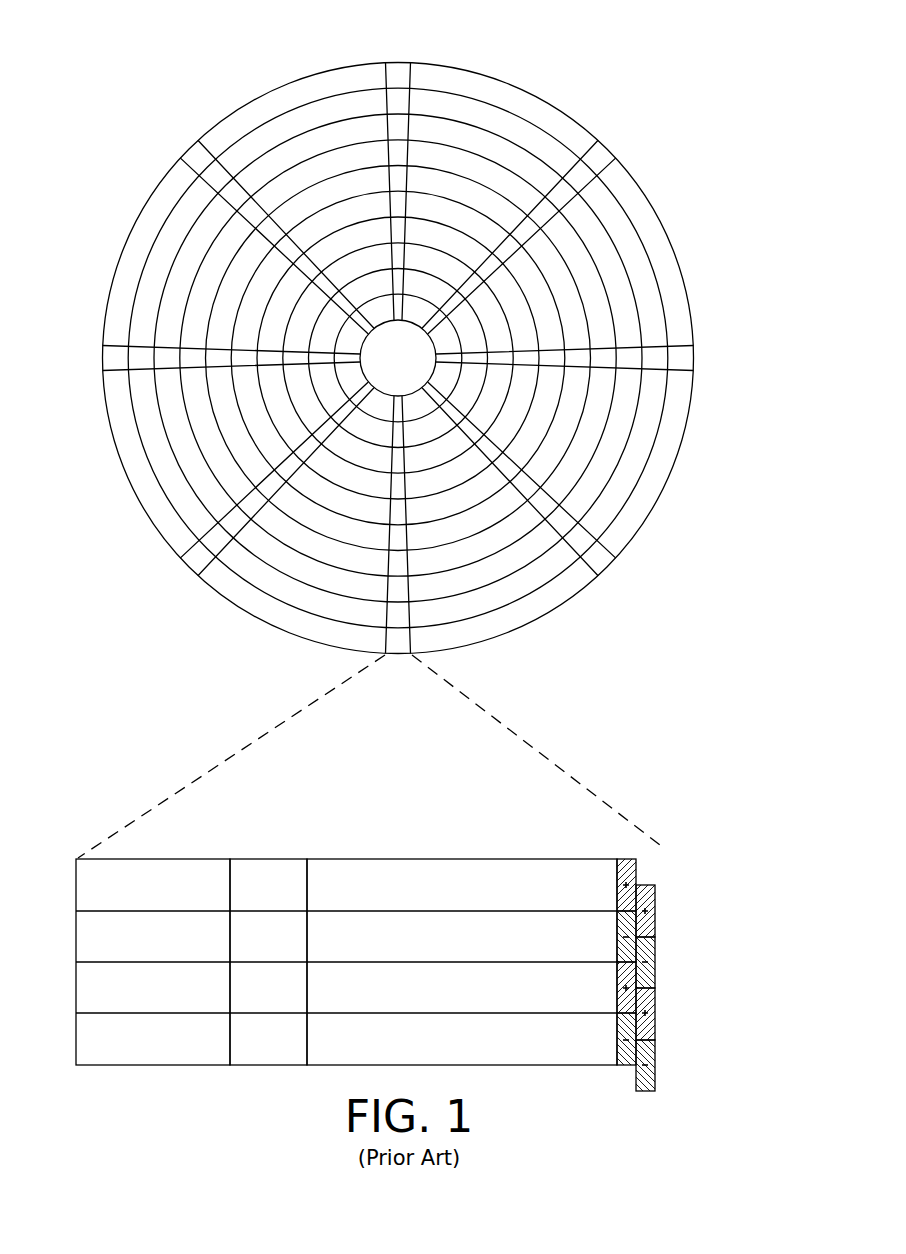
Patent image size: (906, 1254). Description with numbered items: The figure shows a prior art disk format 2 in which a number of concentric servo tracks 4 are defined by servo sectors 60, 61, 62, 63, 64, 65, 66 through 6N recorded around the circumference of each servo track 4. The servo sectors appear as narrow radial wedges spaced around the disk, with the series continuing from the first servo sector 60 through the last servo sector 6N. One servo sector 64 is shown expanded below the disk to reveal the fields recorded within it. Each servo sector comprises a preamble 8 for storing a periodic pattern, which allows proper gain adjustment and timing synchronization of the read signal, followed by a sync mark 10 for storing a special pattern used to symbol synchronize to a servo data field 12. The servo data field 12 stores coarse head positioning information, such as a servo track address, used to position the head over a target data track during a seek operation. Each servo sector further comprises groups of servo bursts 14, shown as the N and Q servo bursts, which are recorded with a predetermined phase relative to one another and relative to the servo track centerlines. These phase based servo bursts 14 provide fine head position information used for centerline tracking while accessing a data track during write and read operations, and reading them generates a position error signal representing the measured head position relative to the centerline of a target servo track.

The disk format 2 is at (182, 67).
The servo track 4 is at (519, 105).
The servo sector 60 is at (398, 72).
The servo sector 61 is at (598, 157).
The servo sector 62 is at (685, 358).
The servo sector 63 is at (598, 563).
The servo sector 64 is at (268, 724).
The servo sector 65 is at (195, 563).
The servo sector 66 is at (108, 358).
The servo sector 6N is at (197, 157).
The preamble 8 is at (159, 859).
The sync mark 10 is at (271, 859).
The servo data field 12 is at (450, 859).
The servo bursts 14 is at (653, 860).